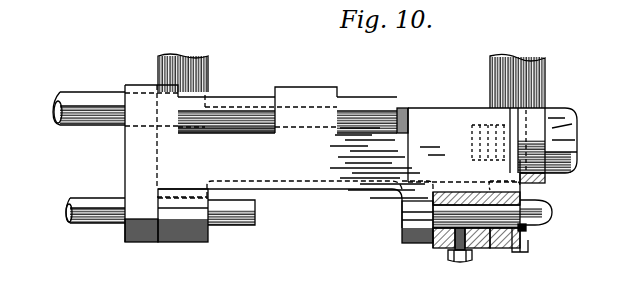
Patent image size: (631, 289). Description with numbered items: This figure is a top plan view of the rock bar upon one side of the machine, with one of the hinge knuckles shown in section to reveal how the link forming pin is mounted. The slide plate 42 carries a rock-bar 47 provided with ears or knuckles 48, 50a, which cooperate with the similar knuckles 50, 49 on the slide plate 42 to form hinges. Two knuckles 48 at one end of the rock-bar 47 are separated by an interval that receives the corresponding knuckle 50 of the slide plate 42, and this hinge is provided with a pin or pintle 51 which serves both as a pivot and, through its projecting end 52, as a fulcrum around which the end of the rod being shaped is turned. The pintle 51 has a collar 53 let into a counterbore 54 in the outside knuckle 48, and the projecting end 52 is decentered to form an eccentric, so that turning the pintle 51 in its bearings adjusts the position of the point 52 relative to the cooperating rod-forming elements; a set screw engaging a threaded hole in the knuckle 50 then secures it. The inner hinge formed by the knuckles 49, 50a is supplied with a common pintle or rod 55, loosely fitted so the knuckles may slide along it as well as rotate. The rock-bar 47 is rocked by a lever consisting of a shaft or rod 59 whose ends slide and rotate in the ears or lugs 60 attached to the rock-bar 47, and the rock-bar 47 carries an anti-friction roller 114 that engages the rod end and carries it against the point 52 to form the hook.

The slide plate 42 is at (531, 86).
The rock-bar 47 is at (318, 172).
The knuckle 48 is at (402, 244).
The knuckle 49 is at (196, 246).
The knuckle 50 is at (440, 246).
The knuckle 50a is at (148, 230).
The pin or pintle 51 is at (456, 212).
The projecting end 52 is at (547, 210).
The collar 53 is at (523, 229).
The counterbore 54 is at (522, 245).
The pintle or rod 55 is at (101, 223).
The shaft or rod 59 is at (231, 102).
The ear or lug 60 is at (137, 86).
The anti-friction roller 114 is at (532, 143).